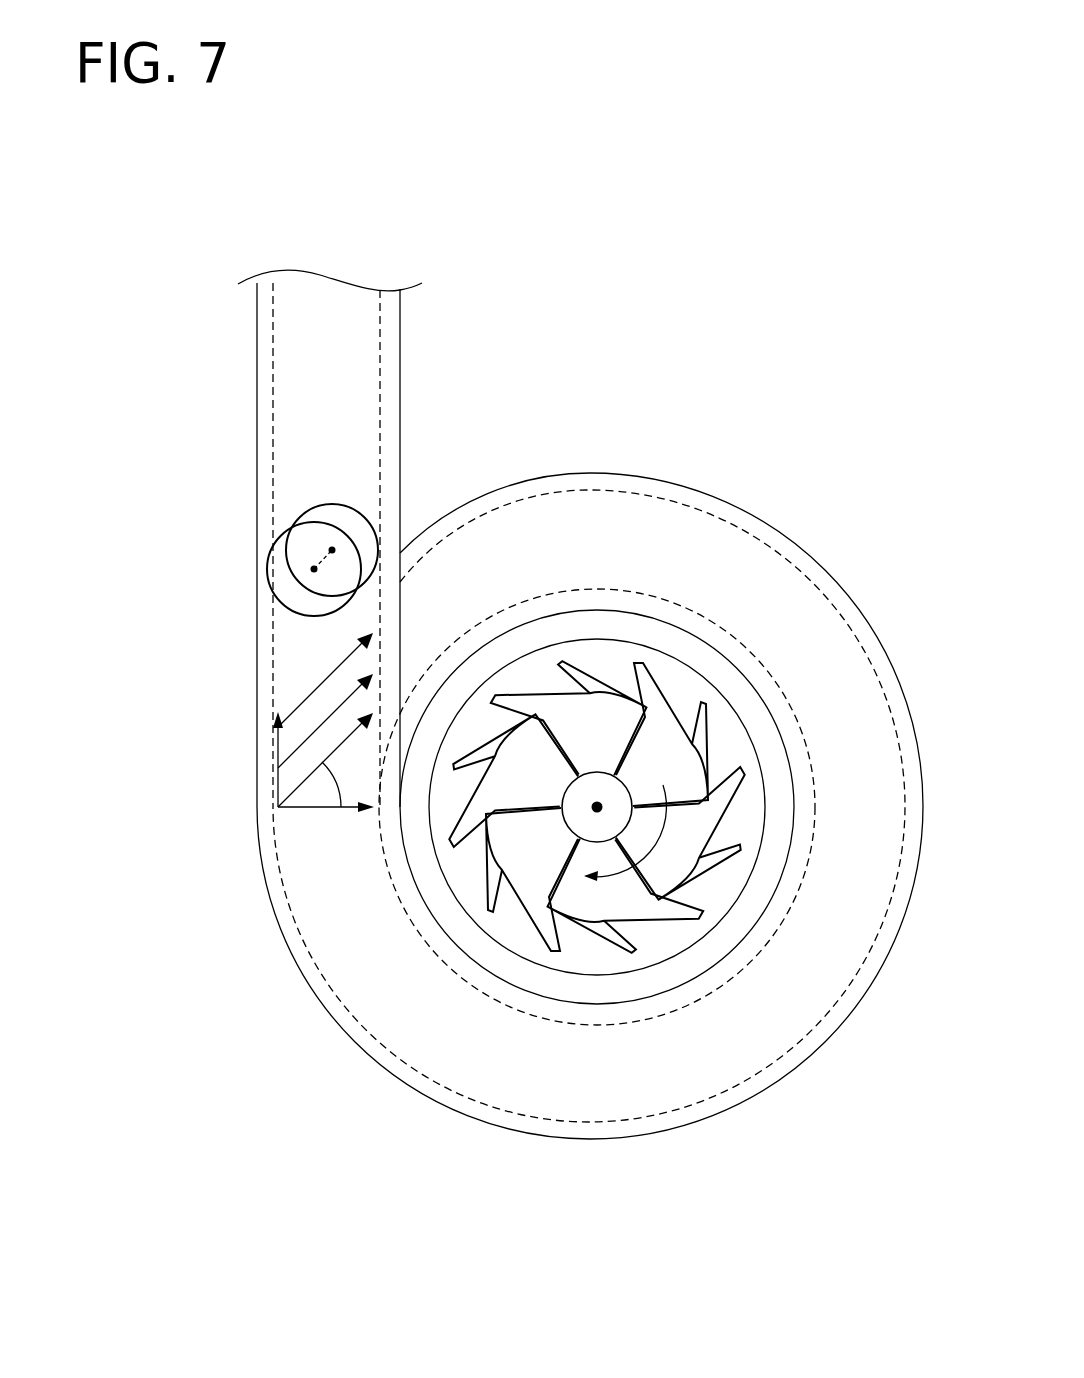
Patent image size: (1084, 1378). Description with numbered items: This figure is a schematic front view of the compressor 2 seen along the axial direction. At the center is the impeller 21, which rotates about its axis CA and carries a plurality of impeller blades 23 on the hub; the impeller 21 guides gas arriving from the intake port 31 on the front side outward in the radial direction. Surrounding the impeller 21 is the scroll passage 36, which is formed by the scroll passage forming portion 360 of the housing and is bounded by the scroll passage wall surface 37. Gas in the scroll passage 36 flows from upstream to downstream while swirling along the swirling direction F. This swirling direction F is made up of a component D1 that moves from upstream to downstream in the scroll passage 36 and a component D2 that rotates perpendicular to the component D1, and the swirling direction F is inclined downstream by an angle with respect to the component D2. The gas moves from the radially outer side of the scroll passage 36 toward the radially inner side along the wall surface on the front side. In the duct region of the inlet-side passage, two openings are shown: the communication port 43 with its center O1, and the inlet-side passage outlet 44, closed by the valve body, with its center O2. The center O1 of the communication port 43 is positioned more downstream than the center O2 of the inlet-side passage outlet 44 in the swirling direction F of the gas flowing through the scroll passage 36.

The compressor 2 is at (188, 186).
The communication port 43 is at (370, 515).
The inlet-side passage outlet 44 is at (285, 607).
The center of the communication port O1 is at (332, 550).
The center of the inlet-side passage outlet O2 is at (313, 569).
The component moving from upstream to downstream D1 is at (278, 747).
The rotating component D2 is at (320, 809).
The swirling direction F is at (297, 787).
The axis CA is at (600, 805).
The impeller 21 is at (735, 798).
The impeller blade 23 is at (708, 736).
The intake port 31 is at (760, 857).
The scroll passage 36 is at (672, 1090).
The scroll passage forming portion 360 is at (556, 1140).
The scroll passage wall surface 37 is at (478, 1102).